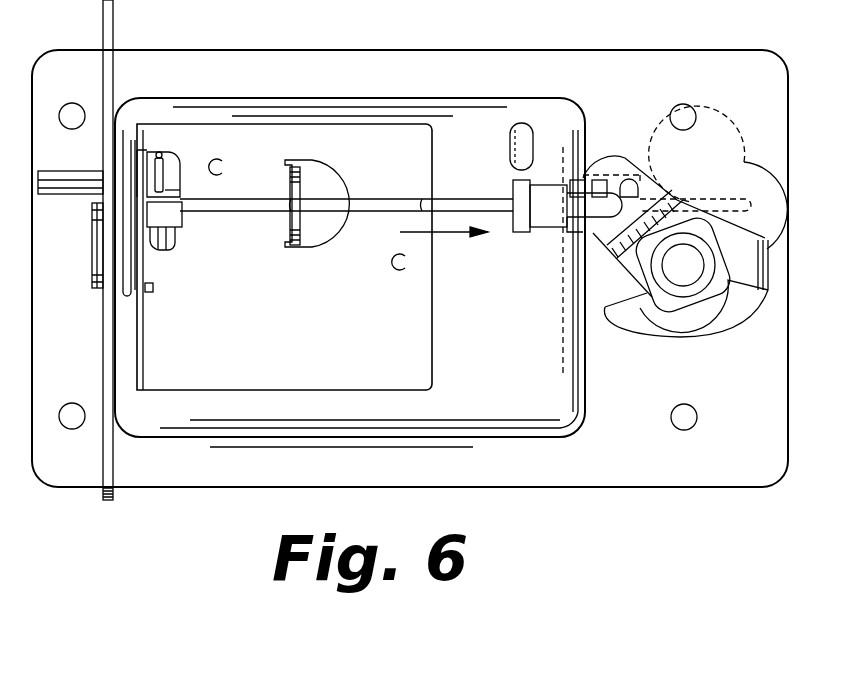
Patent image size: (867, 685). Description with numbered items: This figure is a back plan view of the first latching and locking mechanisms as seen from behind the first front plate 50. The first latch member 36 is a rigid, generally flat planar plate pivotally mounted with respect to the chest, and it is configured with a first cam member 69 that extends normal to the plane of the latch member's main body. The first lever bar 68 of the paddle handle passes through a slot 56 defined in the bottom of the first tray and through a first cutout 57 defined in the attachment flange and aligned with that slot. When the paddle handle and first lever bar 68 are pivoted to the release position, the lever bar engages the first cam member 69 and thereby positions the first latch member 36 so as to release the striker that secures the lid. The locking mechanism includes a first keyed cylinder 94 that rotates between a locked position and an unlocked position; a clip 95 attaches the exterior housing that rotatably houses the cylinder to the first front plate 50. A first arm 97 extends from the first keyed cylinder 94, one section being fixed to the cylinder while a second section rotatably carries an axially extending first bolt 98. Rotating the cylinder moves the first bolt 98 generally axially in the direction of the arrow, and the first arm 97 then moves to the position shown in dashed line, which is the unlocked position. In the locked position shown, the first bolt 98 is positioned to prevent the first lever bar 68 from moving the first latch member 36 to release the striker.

The first front plate 50 is at (622, 65).
The first latch member 36 is at (103, 360).
The slot 56 is at (168, 152).
The first cutout 57 is at (172, 180).
The first lever bar 68 is at (185, 172).
The first cam member 69 is at (177, 217).
The first bolt 98 is at (400, 198).
The first arm 97 is at (655, 180).
The first keyed cylinder 94 is at (645, 286).
The clip 95 is at (733, 320).